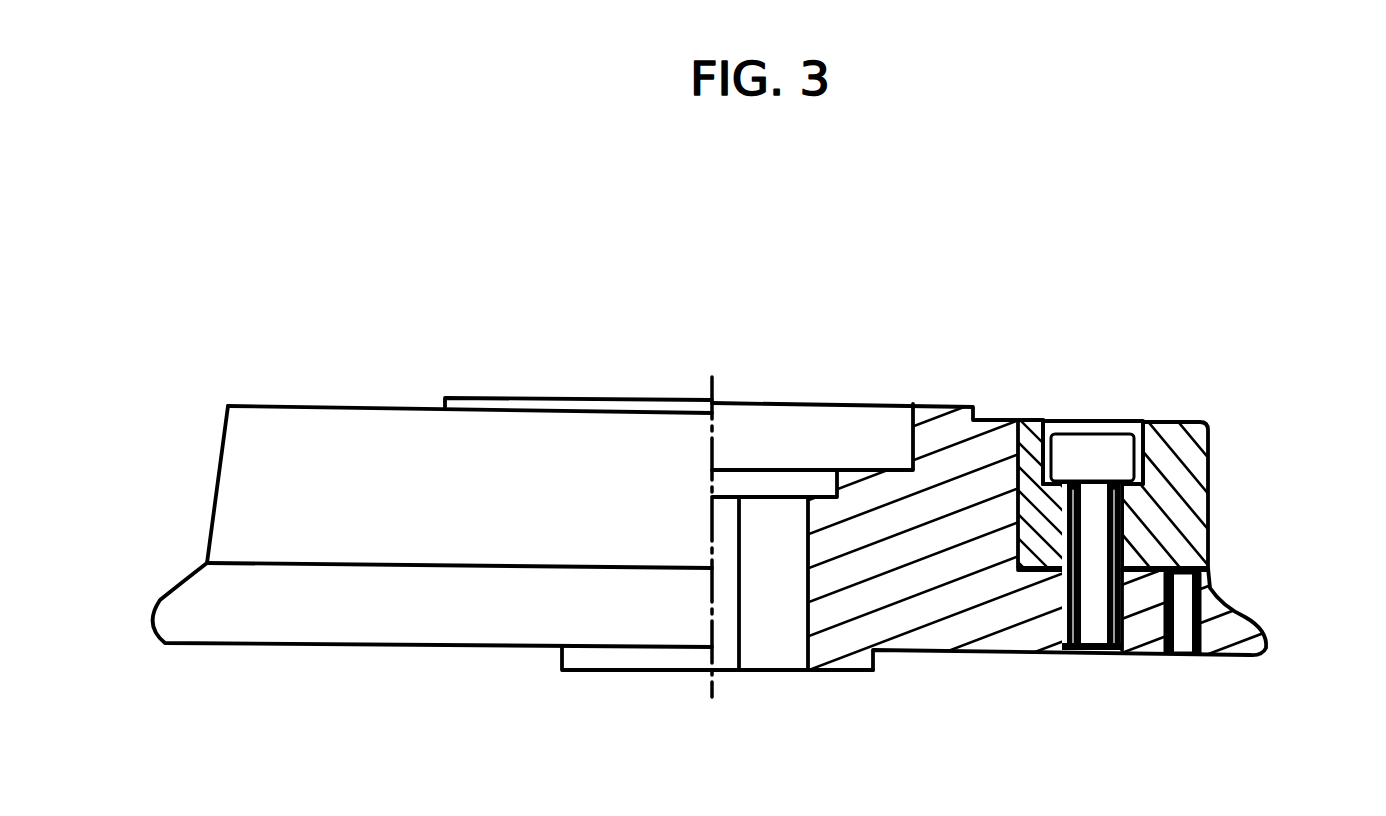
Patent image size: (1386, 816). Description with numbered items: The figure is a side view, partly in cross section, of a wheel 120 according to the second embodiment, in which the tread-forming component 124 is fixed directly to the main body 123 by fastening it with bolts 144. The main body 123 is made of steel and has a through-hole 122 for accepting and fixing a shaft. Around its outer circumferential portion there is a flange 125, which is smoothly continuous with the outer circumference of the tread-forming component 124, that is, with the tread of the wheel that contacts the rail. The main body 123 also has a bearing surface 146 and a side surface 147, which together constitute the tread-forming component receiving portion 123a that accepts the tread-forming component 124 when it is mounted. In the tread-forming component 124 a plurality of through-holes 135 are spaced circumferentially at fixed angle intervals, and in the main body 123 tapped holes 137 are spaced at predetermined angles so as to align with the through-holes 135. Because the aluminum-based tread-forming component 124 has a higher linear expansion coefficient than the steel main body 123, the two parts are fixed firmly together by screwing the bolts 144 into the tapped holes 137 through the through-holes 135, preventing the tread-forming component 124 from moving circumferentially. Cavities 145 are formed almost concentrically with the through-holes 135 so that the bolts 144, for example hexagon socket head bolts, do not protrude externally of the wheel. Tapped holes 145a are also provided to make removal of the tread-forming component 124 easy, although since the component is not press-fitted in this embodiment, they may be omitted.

The wheel 120 is at (594, 369).
The through-hole 122 is at (807, 625).
The main body 123 is at (850, 642).
The tread-forming component receiving portion 123a is at (1208, 473).
The tread-forming component 124 is at (305, 436).
The flange 125 is at (173, 614).
The through-holes 135 is at (1105, 520).
The tapped holes 137 is at (1080, 613).
The bolts 144 is at (1068, 455).
The cavities 145 is at (1045, 420).
The tapped holes 145a is at (1173, 655).
The bearing surface 146 is at (1130, 565).
The side surface 147 is at (1023, 478).